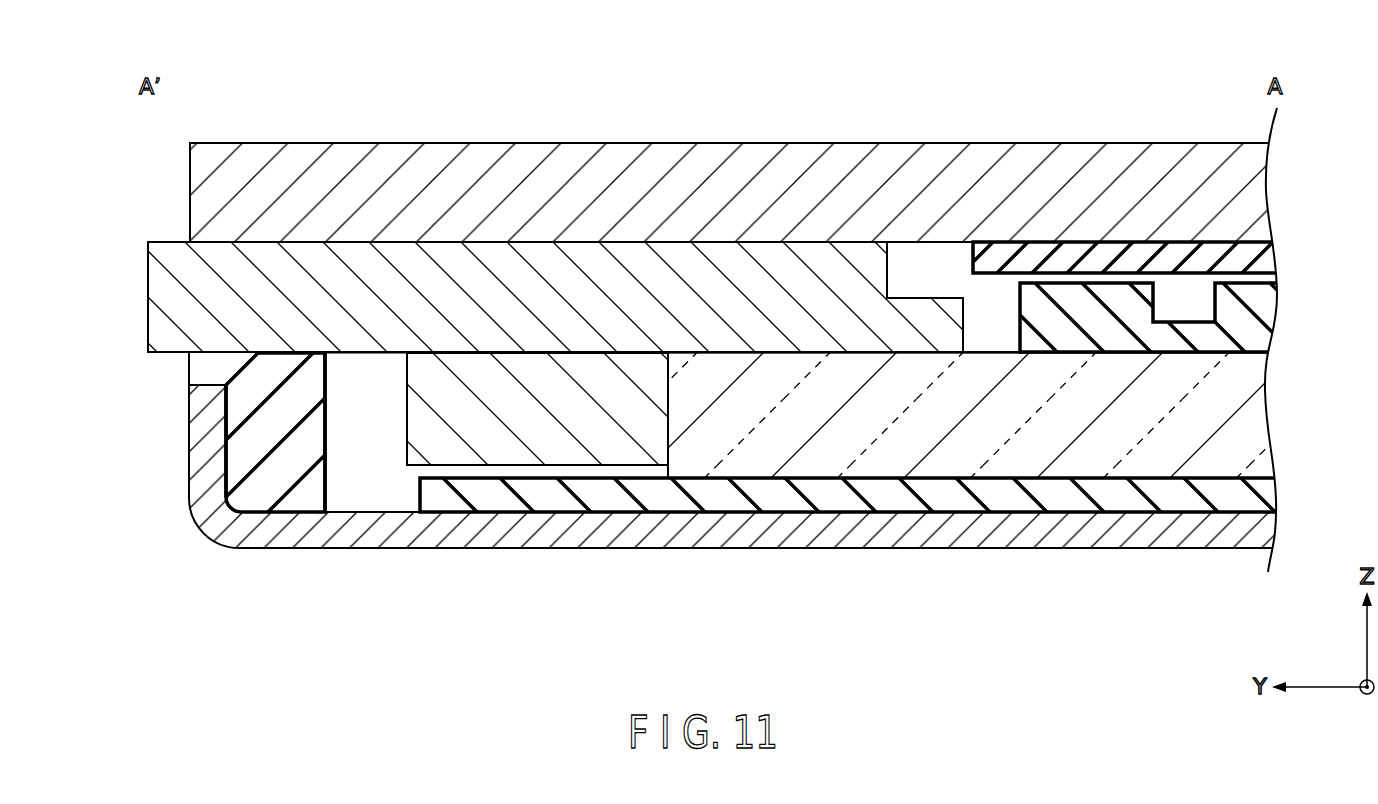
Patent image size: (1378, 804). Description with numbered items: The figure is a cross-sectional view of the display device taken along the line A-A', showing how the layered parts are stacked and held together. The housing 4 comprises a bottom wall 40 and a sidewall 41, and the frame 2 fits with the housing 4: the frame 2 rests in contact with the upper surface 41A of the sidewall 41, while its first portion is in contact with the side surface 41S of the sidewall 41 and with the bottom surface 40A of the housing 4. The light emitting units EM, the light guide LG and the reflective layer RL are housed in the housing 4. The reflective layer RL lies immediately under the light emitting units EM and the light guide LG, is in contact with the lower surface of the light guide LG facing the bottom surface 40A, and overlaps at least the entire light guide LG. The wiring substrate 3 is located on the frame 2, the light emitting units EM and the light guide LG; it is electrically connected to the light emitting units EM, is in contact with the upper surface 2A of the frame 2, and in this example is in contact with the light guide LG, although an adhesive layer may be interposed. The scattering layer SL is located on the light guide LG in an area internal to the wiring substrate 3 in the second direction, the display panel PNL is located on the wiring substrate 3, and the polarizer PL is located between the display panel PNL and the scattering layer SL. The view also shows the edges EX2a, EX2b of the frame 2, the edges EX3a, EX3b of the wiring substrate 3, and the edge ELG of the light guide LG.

The display panel PNL is at (1253, 187).
The polarizer PL is at (1270, 252).
The scattering layer SL is at (1260, 342).
The light guide LG is at (1258, 420).
The reflective layer RL is at (1265, 495).
The housing 4 is at (1263, 531).
The bottom wall 40 is at (828, 537).
The bottom surface 40A is at (395, 497).
The sidewall 41 is at (197, 452).
The upper surface 41A is at (213, 368).
The side surface 41S is at (240, 438).
The wiring substrate 3 is at (157, 287).
The frame 2 is at (271, 482).
The upper surface 2A is at (243, 335).
The edge EX2a is at (337, 366).
The edge EX2b is at (175, 363).
The edge EX3a is at (976, 299).
The edge EX3b is at (142, 231).
The light emitting unit EM is at (522, 450).
The edge ELG is at (664, 366).